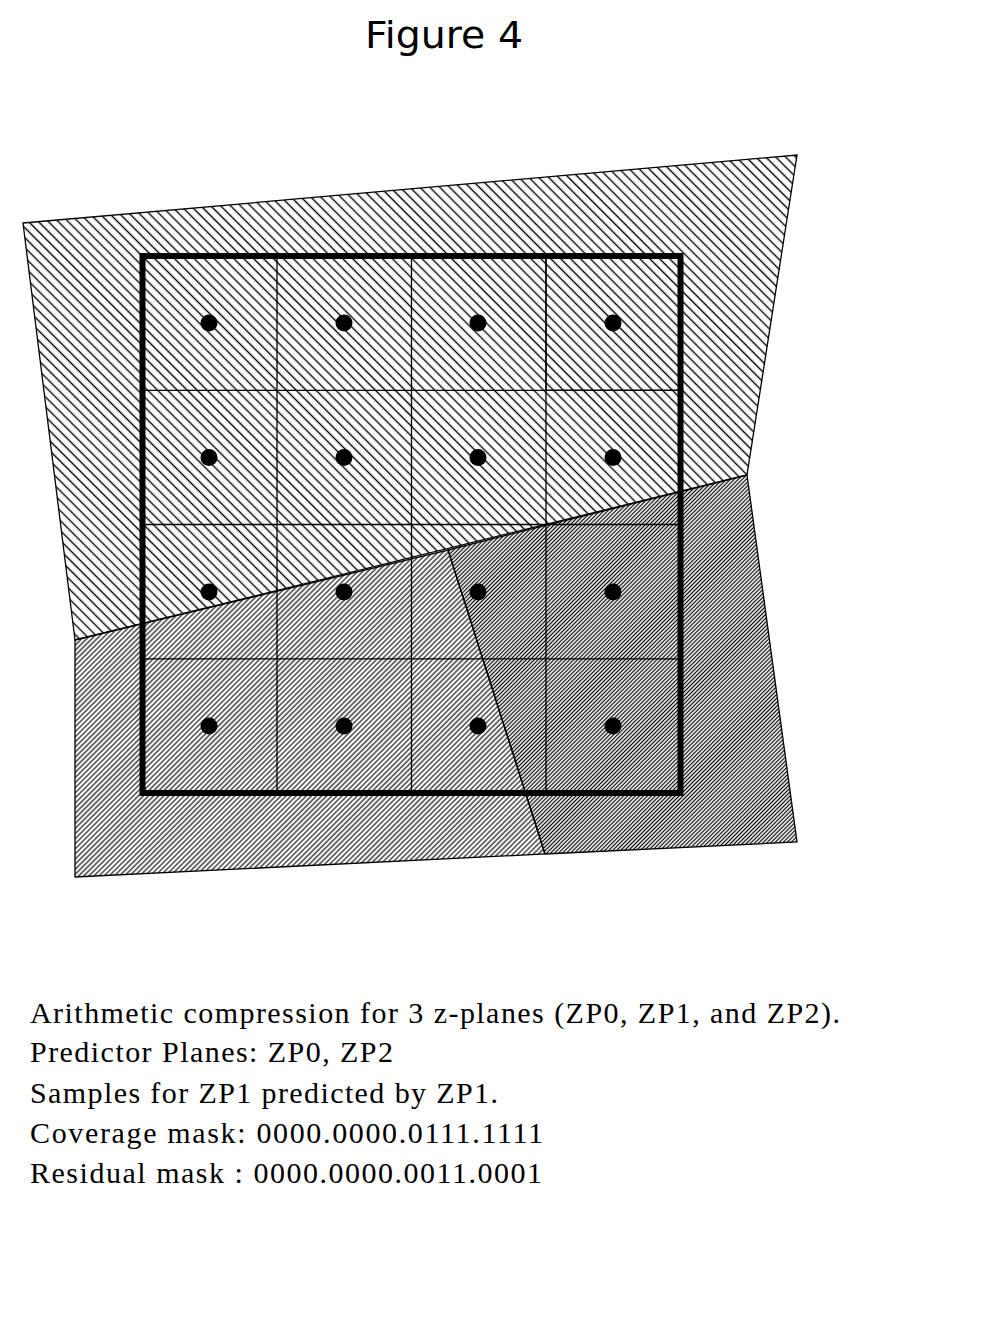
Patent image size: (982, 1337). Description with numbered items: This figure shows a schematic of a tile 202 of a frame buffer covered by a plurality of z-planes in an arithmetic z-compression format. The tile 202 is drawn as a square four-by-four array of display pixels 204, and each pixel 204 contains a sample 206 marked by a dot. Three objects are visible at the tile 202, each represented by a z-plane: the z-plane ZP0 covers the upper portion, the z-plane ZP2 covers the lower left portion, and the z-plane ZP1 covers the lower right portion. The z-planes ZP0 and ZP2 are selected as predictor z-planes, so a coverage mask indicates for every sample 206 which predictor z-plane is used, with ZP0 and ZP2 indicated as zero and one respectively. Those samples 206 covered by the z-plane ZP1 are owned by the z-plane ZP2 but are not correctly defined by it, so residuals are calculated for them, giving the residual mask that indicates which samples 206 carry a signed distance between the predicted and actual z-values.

The tile 202 is at (700, 312).
The display pixel 204 is at (578, 282).
The sample 206 is at (617, 327).
The z-plane ZP0 is at (690, 163).
The z-plane ZP1 is at (712, 848).
The z-plane ZP2 is at (157, 875).